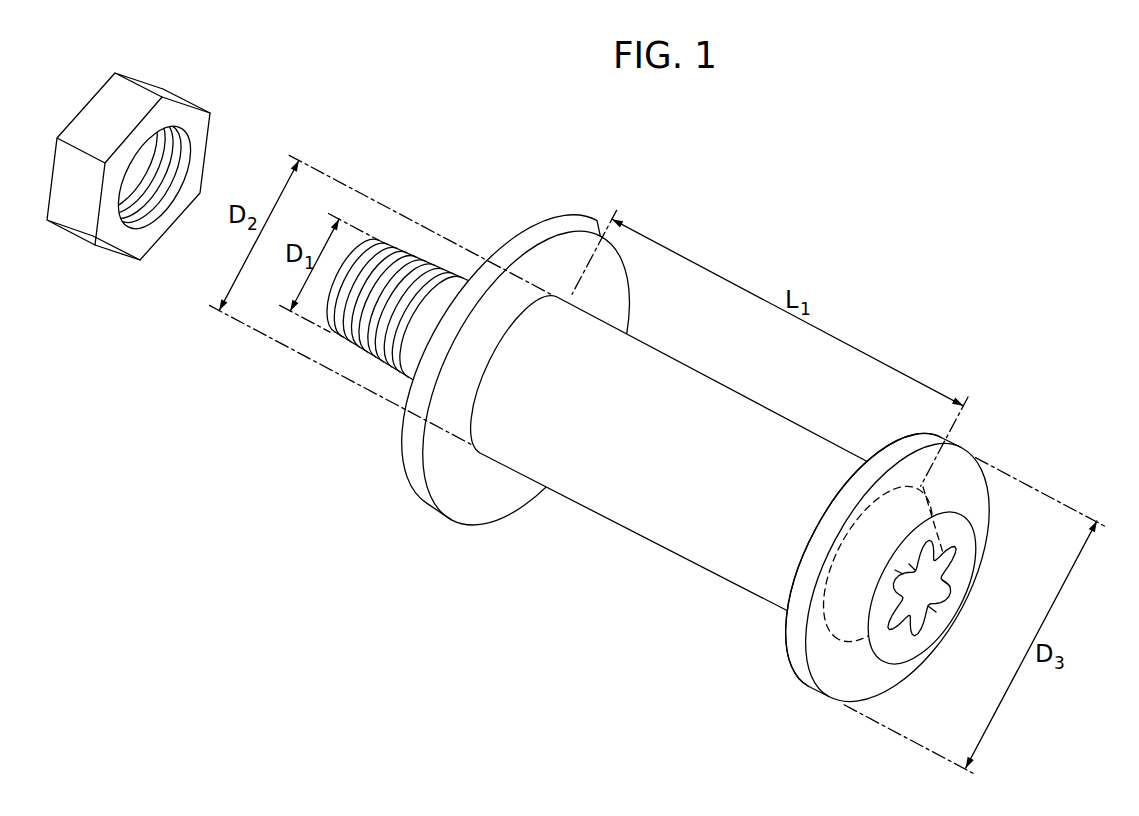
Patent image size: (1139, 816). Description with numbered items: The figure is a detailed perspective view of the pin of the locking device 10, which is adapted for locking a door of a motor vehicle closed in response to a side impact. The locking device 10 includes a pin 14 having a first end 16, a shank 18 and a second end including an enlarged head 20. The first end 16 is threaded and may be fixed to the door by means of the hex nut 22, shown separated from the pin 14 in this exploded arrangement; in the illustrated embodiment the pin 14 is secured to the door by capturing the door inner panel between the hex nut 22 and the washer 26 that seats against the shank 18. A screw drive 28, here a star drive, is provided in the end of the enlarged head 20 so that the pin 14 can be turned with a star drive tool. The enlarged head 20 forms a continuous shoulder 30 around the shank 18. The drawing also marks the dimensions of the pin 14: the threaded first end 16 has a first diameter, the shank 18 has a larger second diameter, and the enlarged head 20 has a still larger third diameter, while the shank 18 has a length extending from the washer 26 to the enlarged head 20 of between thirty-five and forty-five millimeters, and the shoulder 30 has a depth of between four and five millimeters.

The locking device 10 is at (548, 419).
The pin 14 is at (665, 490).
The first end 16 is at (363, 353).
The shank 18 is at (610, 497).
The enlarged head 20 is at (866, 599).
The hex nut 22 is at (203, 126).
The washer 26 is at (413, 480).
The screw drive 28 is at (920, 585).
The shoulder 30 is at (782, 621).